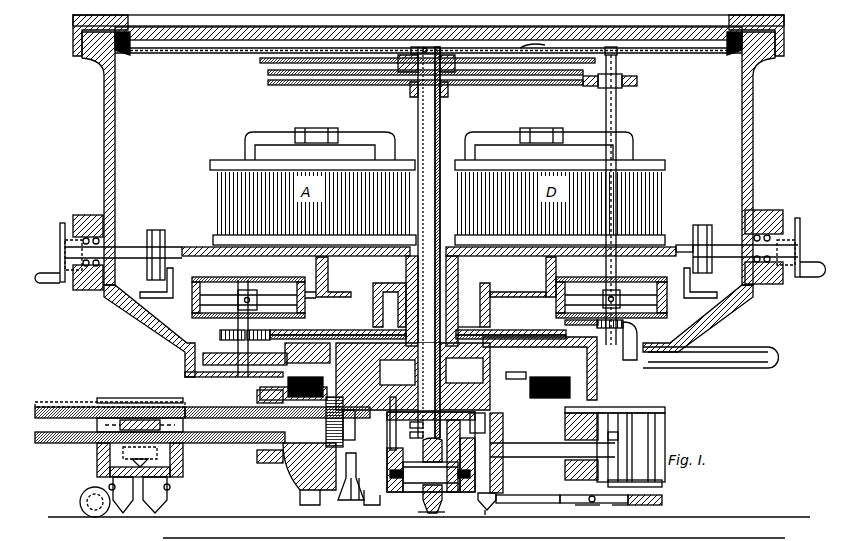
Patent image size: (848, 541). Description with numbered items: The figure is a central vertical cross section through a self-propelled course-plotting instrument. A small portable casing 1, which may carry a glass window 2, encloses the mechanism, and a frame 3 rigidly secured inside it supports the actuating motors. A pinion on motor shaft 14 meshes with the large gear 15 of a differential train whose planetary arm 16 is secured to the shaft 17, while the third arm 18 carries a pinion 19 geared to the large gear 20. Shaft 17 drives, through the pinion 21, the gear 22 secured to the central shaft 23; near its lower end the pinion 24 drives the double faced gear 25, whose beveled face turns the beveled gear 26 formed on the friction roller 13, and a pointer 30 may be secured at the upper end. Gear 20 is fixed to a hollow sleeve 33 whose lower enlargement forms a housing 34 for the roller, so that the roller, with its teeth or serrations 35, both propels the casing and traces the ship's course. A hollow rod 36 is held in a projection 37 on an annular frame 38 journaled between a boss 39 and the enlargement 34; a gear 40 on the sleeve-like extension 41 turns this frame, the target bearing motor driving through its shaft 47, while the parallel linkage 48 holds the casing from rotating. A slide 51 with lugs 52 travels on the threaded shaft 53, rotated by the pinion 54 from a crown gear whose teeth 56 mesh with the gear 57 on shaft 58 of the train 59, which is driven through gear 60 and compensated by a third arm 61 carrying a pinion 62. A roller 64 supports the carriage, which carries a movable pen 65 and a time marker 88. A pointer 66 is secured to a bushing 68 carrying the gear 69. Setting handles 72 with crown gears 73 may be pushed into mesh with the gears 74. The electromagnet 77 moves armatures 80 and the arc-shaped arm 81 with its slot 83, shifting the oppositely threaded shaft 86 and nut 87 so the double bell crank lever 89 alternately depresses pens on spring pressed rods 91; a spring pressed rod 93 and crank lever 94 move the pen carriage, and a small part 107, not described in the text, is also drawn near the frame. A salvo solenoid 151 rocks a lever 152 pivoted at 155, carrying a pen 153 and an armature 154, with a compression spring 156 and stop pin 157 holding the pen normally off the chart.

The casing 1 is at (110, 118).
The glass window 2 is at (429, 527).
The frame 3 is at (205, 247).
The friction roller 13 is at (423, 503).
The motor shaft 14 is at (556, 264).
The large gear 15 is at (520, 292).
The planetary arm 16 is at (611, 297).
The shaft 17 is at (618, 116).
The third arm 18 is at (625, 323).
The pinion 19 is at (631, 341).
The large gear 20 is at (506, 328).
The pinion 21 is at (638, 81).
The gear 22 is at (528, 85).
The central shaft 23 is at (440, 113).
The pinion 24 is at (411, 428).
The double faced gear 25 is at (423, 437).
The beveled gear 26 is at (442, 503).
The pointer 30 is at (540, 42).
The hollow shaft or sleeve 33 is at (440, 133).
The housing 34 is at (387, 455).
The teeth or serrations 35 is at (430, 514).
The rod 36 is at (62, 405).
The projection 37 is at (278, 458).
The annular frame 38 is at (480, 423).
The boss 39 is at (413, 376).
The gear 40 is at (474, 305).
The sleeve-like extension 41 is at (389, 305).
The shaft 47 is at (329, 268).
The parallel linkage 48 is at (745, 370).
The slide 51 is at (135, 398).
The lugs 52 is at (97, 452).
The threaded shaft 53 is at (228, 407).
The pinion 54 is at (326, 424).
The gear teeth 56 is at (571, 382).
The gear 57 is at (238, 345).
The shaft 58 is at (258, 304).
The epicyclic train 59 is at (192, 309).
The gear 60 is at (340, 296).
The third arm 61 is at (220, 334).
The pinion 62 is at (247, 334).
The roller 64 is at (80, 503).
The movable pen 65 is at (124, 513).
The pointer 66 is at (268, 61).
The bushing 68 is at (410, 78).
The gear 69 is at (268, 76).
The setting handle 72 is at (62, 232).
The crown gear 73 is at (158, 230).
The gear 74 is at (165, 285).
The electromagnet 77 is at (596, 408).
The armature 80 is at (618, 437).
The arc-shaped arm 81 is at (360, 476).
The slot 83 is at (346, 440).
The threaded shaft 86 is at (240, 444).
The nut 87 is at (97, 427).
The time marker 88 is at (167, 503).
The double bell crank lever 89 is at (136, 452).
The spring pressed rods 91 is at (138, 466).
The spring pressed rod 93 is at (305, 495).
The crank lever 94 is at (364, 490).
The contact 107 is at (527, 372).
The solenoid 151 is at (665, 424).
The lever 152 is at (618, 512).
The pen 153 is at (487, 512).
The armature 154 is at (662, 501).
The pivot 155 is at (592, 505).
The compression spring 156 is at (594, 506).
The stop pin 157 is at (519, 505).